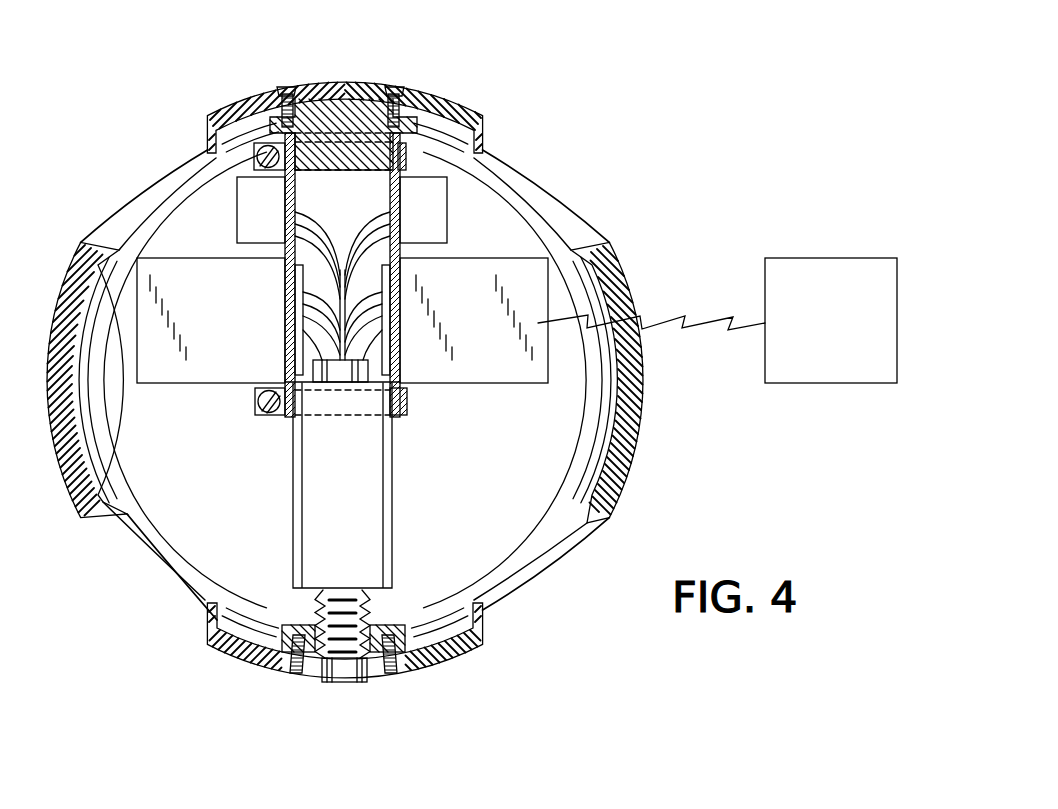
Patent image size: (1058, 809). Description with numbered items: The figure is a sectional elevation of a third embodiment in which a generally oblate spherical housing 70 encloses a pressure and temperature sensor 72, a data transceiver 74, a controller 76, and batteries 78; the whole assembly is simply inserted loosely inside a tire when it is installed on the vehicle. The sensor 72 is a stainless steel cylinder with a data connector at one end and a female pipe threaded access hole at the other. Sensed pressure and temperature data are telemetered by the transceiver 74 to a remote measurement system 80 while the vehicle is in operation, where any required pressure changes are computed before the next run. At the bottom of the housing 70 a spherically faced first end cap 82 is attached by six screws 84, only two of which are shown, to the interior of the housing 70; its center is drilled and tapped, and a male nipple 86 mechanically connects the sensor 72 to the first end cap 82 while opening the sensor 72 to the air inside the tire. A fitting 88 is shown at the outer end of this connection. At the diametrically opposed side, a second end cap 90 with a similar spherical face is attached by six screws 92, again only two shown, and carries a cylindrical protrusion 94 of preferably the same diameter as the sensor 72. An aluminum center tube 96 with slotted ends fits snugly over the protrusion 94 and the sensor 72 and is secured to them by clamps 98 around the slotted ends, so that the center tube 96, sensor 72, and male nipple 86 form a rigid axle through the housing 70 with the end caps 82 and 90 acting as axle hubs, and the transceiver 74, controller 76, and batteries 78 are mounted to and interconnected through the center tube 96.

The spherical housing 70 is at (492, 470).
The pressure and temperature sensor 72 is at (324, 515).
The data transceiver 74 is at (452, 333).
The controller 76 is at (192, 333).
The batteries 78 is at (238, 220).
The remote measurement system 80 is at (826, 272).
The first end cap 82 is at (262, 640).
The screws 84 is at (292, 676).
The male nipple 86 is at (314, 600).
The nut 88 is at (353, 686).
The second end cap 90 is at (326, 112).
The screws 92 is at (287, 88).
The cylindrical protrusion 94 is at (355, 128).
The center tube 96 is at (295, 342).
The clamps 98 is at (254, 155).